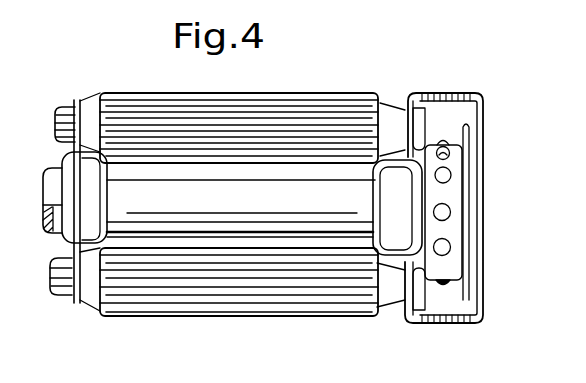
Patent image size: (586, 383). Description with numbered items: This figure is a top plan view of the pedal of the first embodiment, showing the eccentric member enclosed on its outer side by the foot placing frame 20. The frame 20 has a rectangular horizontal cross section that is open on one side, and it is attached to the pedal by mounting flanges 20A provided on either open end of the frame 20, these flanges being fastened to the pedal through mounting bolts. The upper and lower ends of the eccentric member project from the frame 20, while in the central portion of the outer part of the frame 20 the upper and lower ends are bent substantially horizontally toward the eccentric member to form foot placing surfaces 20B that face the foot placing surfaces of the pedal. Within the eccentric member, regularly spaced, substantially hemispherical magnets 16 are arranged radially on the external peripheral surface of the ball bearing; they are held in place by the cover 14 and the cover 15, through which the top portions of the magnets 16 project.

The cover 14 is at (434, 165).
The cover 15 is at (463, 167).
The magnets 16 is at (442, 212).
The foot placing frame 20 is at (481, 320).
The mounting flanges 20A is at (424, 123).
The foot placing surfaces 20B is at (479, 198).